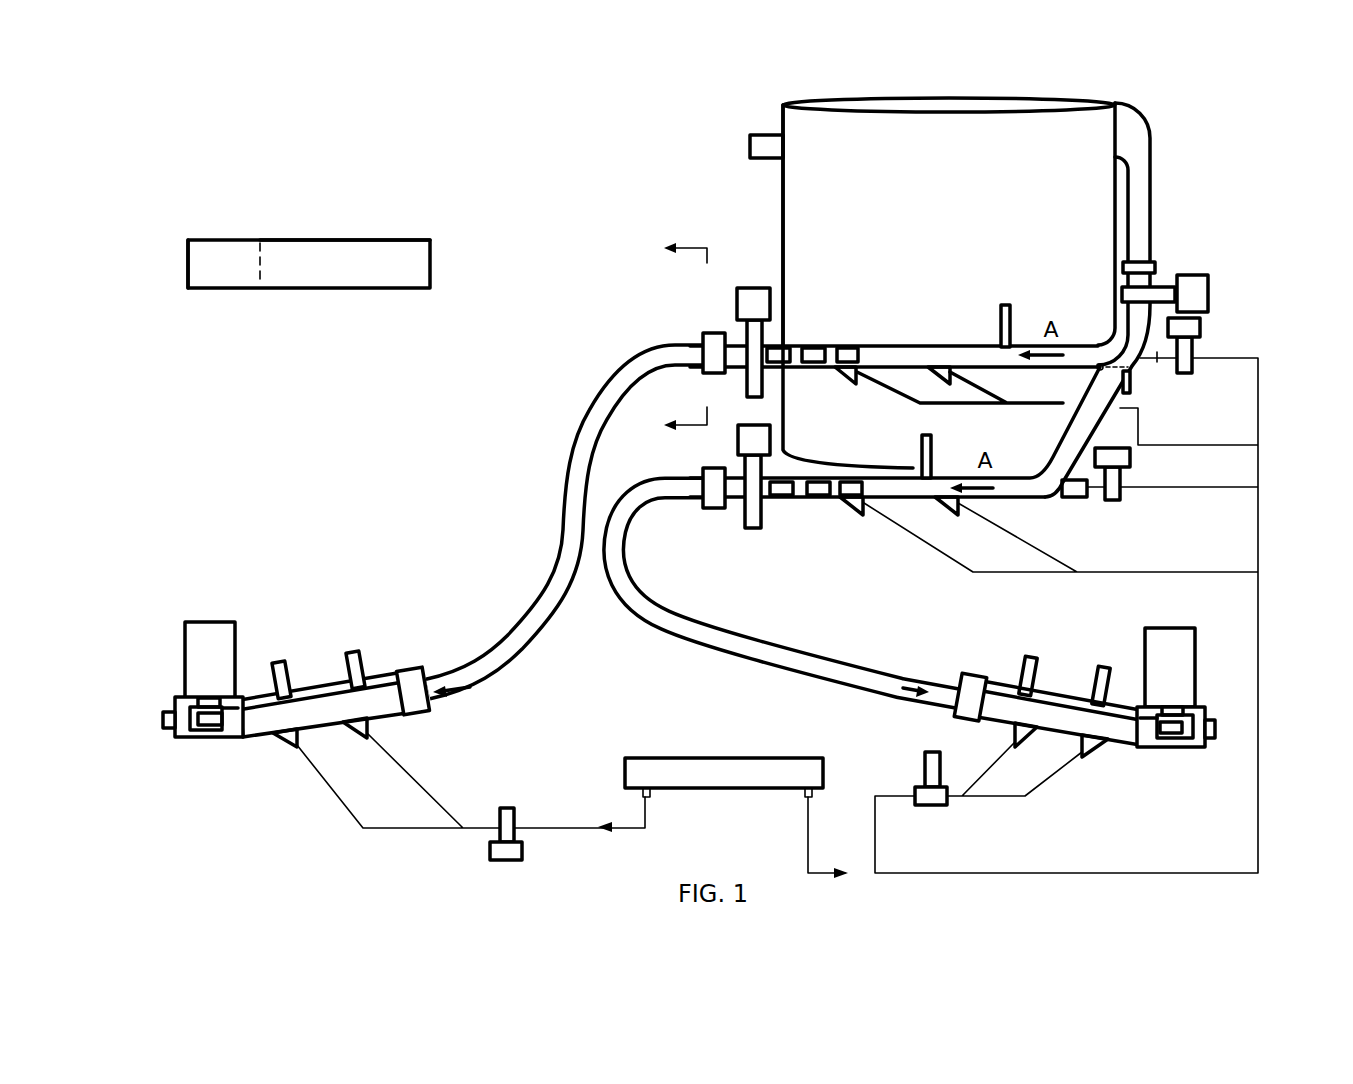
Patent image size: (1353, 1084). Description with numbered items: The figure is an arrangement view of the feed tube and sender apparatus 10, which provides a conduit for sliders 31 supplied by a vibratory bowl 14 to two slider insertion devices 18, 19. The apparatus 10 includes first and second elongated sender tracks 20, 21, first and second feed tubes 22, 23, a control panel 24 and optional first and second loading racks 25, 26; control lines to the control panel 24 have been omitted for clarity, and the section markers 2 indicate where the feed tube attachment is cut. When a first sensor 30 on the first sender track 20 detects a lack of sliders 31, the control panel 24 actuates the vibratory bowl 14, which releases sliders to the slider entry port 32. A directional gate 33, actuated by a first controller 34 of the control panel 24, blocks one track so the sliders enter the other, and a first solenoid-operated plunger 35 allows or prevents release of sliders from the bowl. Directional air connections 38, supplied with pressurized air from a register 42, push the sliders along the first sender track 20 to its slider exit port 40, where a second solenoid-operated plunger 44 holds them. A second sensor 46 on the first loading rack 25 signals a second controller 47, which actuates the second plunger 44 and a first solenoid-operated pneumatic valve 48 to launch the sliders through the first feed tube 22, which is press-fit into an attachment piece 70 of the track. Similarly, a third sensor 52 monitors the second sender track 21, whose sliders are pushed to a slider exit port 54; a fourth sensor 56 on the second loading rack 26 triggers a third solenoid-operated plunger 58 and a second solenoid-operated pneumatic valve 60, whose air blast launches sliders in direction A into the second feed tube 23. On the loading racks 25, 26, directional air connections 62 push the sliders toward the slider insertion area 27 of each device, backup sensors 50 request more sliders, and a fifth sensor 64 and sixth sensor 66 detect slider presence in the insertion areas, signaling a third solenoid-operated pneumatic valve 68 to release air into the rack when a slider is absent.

The feed tube and sender apparatus 10 is at (668, 817).
The vibratory bowl 14 is at (782, 110).
The first slider insertion device 18 is at (223, 622).
The second slider insertion device 19 is at (1185, 628).
The first elongated sender track 20 is at (955, 343).
The second elongated sender track 21 is at (1010, 505).
The first feed tube 22 is at (505, 676).
The second feed tube 23 is at (690, 647).
The control panel 24 is at (278, 292).
The first loading rack 25 is at (415, 672).
The second loading rack 26 is at (1000, 677).
The slider insertion area 27 is at (203, 730).
The first sensor 30 is at (1007, 305).
The sliders 31 is at (812, 345).
The slider entry port 32 is at (1155, 262).
The directional gate 33 is at (1133, 385).
The first controller 34 is at (197, 288).
The first solenoid-operated plunger 35 is at (1205, 275).
The directional air connections 38 is at (838, 380).
The slider exit port 40 is at (772, 335).
The register 42 is at (770, 758).
The second solenoid-operated plunger 44 is at (753, 290).
The second sensor 46 is at (283, 662).
The second controller 47 is at (277, 240).
The first solenoid-operated pneumatic valve 48 is at (1200, 325).
The backup sensor 50 is at (357, 652).
The third sensor 52 is at (933, 453).
The slider exit port 54 is at (777, 502).
The fourth sensor 56 is at (1102, 667).
The third solenoid-operated plunger 58 is at (740, 417).
The second solenoid-operated pneumatic valve 60 is at (1115, 500).
The directional air connections 62 is at (367, 727).
The fifth sensor 64 is at (165, 712).
The sixth sensor 66 is at (1222, 745).
The third solenoid-operated pneumatic valve 68 is at (507, 808).
The attachment piece 70 is at (700, 338).
The section line for FIG. 2 is at (689, 334).